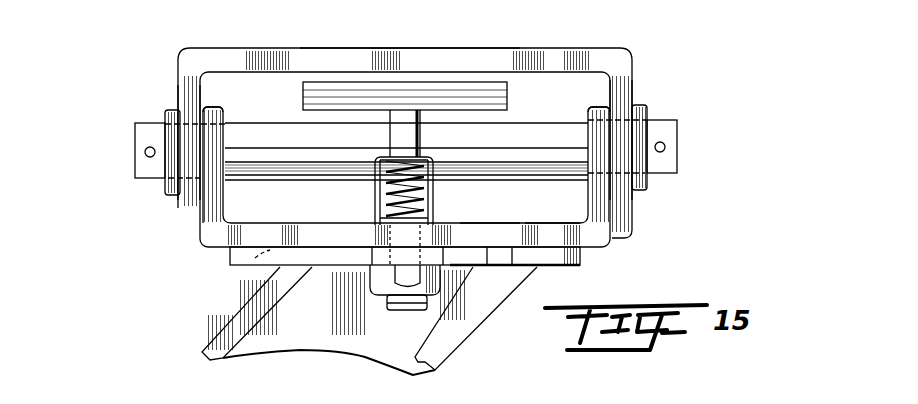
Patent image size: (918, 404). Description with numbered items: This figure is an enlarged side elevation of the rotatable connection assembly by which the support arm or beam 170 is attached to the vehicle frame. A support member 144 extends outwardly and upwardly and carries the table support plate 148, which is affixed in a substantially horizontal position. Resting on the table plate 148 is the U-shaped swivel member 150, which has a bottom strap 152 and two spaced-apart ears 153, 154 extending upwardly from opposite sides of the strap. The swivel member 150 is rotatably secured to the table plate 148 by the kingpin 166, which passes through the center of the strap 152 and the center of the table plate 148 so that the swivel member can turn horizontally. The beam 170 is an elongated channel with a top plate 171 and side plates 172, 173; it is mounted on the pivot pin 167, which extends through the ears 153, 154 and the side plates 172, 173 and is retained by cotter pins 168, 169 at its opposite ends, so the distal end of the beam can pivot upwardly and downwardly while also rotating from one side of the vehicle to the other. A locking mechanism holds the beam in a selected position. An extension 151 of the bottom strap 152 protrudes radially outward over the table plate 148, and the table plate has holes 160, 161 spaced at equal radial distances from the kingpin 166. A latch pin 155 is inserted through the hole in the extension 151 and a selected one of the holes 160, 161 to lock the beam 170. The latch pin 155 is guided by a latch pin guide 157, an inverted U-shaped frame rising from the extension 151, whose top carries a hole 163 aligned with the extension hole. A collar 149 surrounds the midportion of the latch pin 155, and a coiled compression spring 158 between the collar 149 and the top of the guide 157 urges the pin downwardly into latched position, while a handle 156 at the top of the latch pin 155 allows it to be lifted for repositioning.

The support arm or beam 170 is at (643, 49).
The top plate 171 is at (393, 52).
The side plate 172 is at (632, 78).
The side plate 173 is at (178, 85).
The U-shaped swivel member 150 is at (300, 222).
The ear 154 is at (225, 113).
The ear 153 is at (592, 107).
The extension 151 is at (482, 219).
The bottom portion (strap) 152 is at (535, 219).
The cotter pin 169 is at (138, 153).
The cotter pin 168 is at (665, 146).
The pivot pin 167 is at (512, 123).
The handle 156 is at (458, 82).
The latch pin 155 is at (422, 135).
The hole 163 is at (388, 158).
The coiled compression spring 158 is at (427, 172).
The latch pin guide 157 is at (383, 173).
The collar 149 is at (412, 217).
The table support plate 148 is at (230, 268).
The hole 161 is at (263, 270).
The hole 160 is at (372, 262).
The kingpin 166 is at (385, 298).
The support member 144 is at (220, 338).